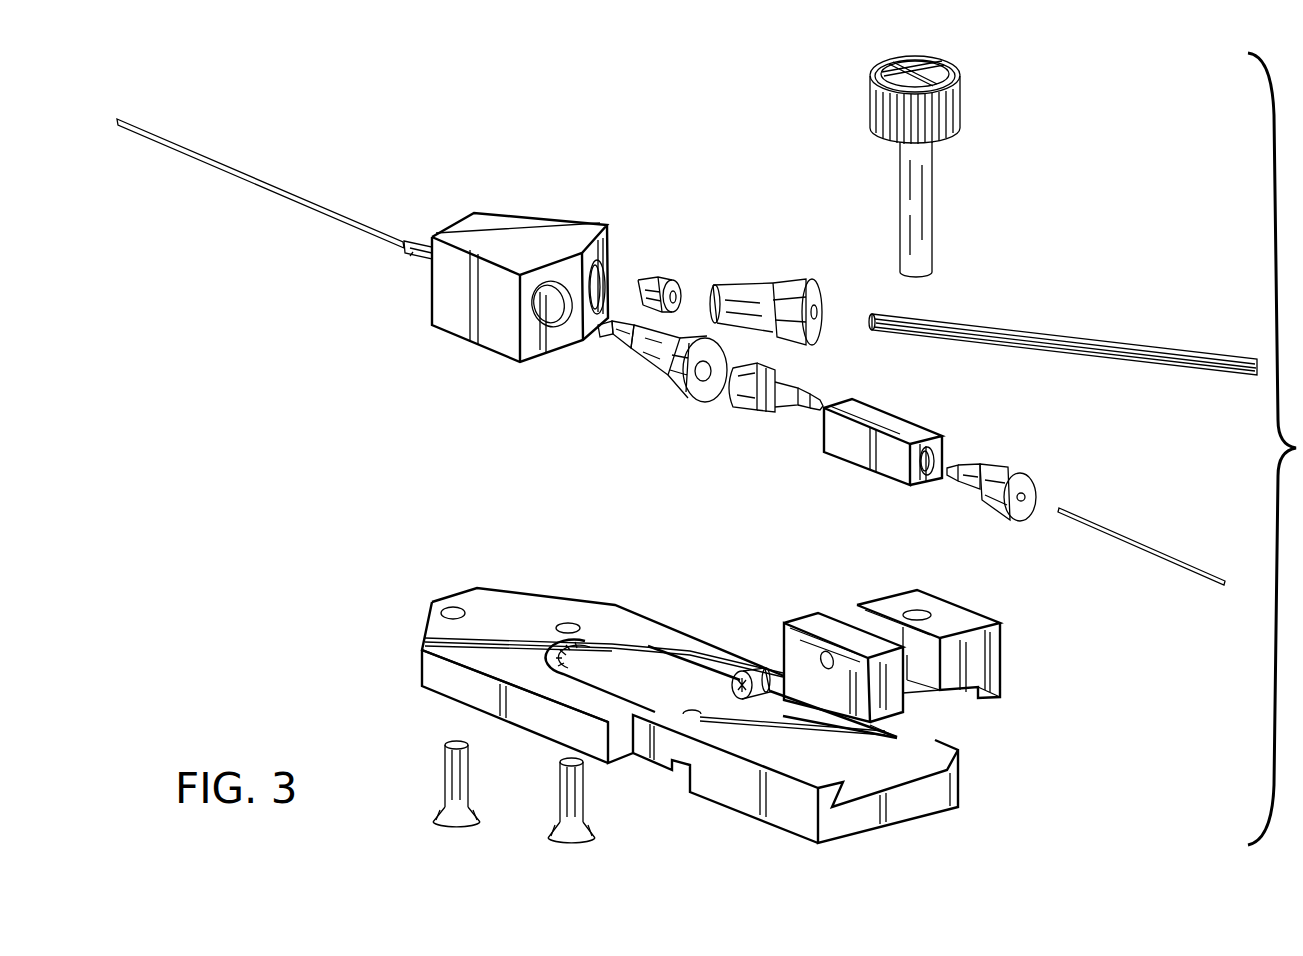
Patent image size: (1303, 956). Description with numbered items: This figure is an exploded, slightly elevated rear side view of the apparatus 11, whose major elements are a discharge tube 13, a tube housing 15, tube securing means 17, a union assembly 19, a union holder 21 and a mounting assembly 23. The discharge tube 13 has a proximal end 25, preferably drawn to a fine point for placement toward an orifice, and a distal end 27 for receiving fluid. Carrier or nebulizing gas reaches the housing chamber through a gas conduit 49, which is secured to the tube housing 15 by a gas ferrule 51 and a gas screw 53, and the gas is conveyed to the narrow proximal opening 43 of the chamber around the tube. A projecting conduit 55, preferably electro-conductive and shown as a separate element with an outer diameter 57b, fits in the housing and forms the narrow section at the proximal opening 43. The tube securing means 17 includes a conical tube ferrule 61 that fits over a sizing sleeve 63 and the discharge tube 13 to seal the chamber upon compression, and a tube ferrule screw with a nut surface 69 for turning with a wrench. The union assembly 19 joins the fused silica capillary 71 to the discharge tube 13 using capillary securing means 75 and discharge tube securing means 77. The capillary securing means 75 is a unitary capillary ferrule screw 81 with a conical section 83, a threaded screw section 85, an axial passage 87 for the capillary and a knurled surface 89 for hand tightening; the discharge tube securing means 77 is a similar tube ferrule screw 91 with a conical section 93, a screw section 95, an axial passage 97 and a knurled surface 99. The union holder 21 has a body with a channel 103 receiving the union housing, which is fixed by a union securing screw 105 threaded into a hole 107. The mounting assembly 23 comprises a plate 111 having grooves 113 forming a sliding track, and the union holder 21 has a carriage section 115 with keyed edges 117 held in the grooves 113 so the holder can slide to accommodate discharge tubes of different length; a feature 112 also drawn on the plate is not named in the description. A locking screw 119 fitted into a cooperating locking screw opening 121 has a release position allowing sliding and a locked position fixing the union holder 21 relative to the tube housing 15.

The apparatus 11 is at (312, 489).
The discharge tube 13 is at (260, 185).
The tube housing 15 is at (594, 236).
The tube securing means 17 is at (635, 374).
The union assembly 19 is at (883, 437).
The union holder 21 is at (919, 643).
The mounting assembly 23 is at (665, 708).
The proximal end 25 is at (118, 121).
The distal end 27 is at (404, 247).
The proximal opening 43 is at (413, 244).
The gas conduit 49 is at (1113, 343).
The gas ferrule 51 is at (666, 279).
The gas screw 53 is at (782, 285).
The projecting conduit 55 is at (413, 262).
The outer diameter 57b is at (412, 258).
The tube ferrule 61 is at (616, 345).
The sizing sleeve 63 is at (602, 340).
The nut surface 69 is at (682, 400).
The fused silica capillary 71 is at (1190, 563).
The capillary securing means 75 is at (1024, 482).
The discharge tube securing means 77 is at (760, 420).
The capillary ferrule screw 81 is at (1037, 493).
The conical section 83 is at (953, 466).
The screw section 85 is at (975, 470).
The axial passage 87 is at (1022, 501).
The knurled surface 89 is at (998, 512).
The tube ferrule screw 91 is at (786, 380).
The conical section 93 is at (812, 415).
The screw section 95 is at (785, 412).
The axial passage 97 is at (832, 405).
The knurled surface 99 is at (758, 411).
The channel 103 is at (858, 612).
The union securing screw 105 is at (755, 670).
The hole 107 is at (824, 652).
The plate 111 is at (523, 604).
The notch 112 is at (838, 805).
The grooves 113 is at (895, 777).
The carriage section 115 is at (993, 692).
The keyed edges 117 is at (888, 722).
The locking screw 119 is at (960, 99).
The locking screw opening 121 is at (918, 610).